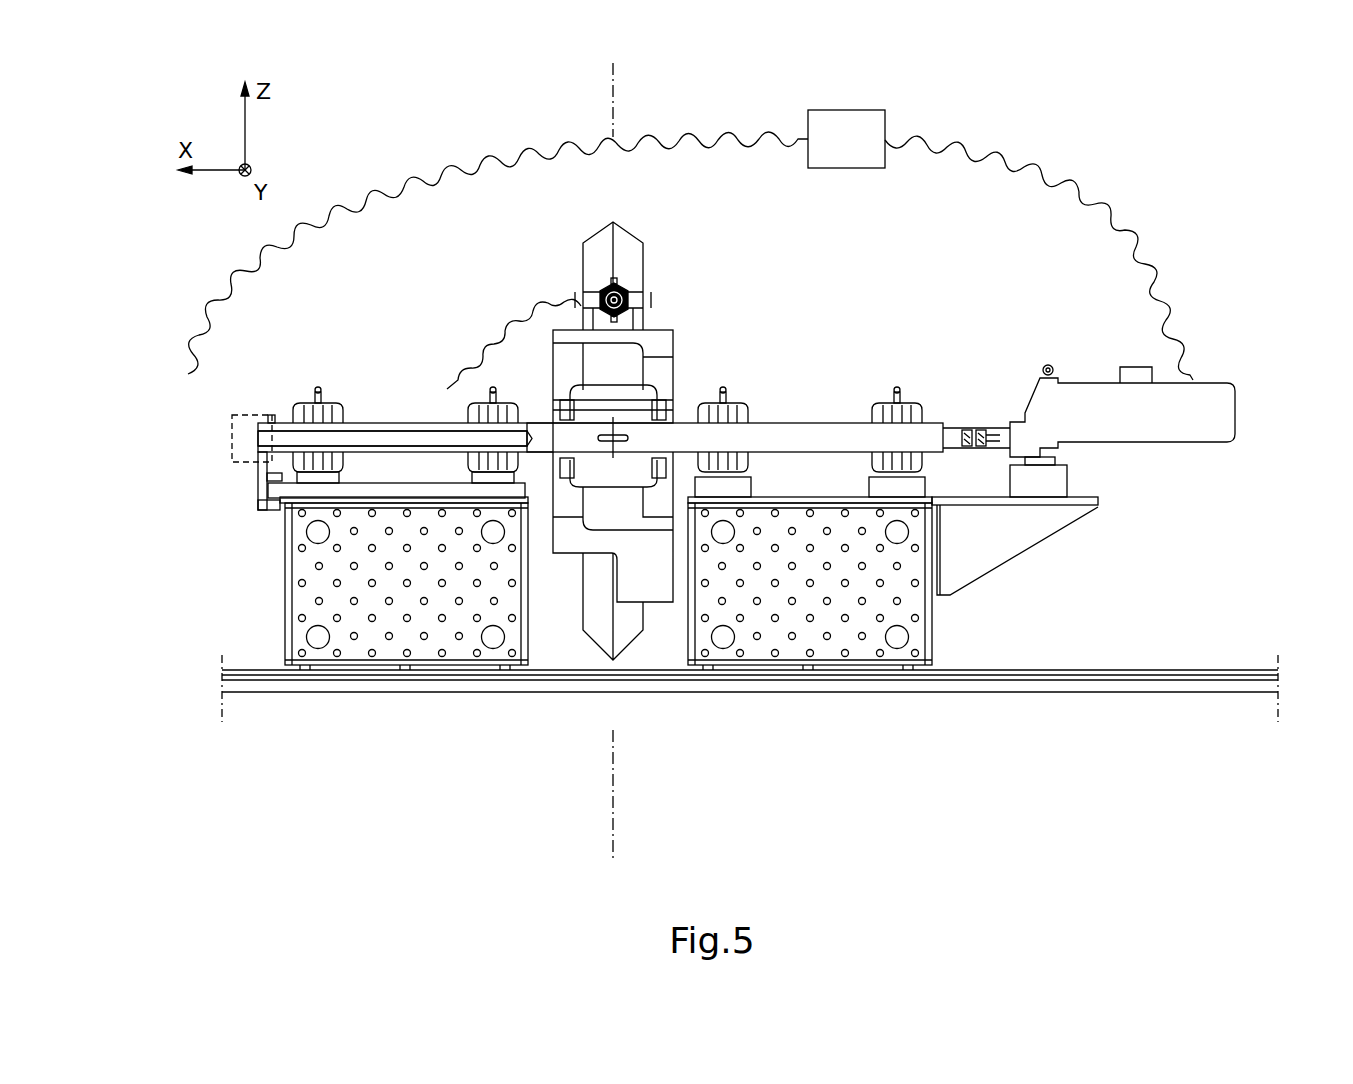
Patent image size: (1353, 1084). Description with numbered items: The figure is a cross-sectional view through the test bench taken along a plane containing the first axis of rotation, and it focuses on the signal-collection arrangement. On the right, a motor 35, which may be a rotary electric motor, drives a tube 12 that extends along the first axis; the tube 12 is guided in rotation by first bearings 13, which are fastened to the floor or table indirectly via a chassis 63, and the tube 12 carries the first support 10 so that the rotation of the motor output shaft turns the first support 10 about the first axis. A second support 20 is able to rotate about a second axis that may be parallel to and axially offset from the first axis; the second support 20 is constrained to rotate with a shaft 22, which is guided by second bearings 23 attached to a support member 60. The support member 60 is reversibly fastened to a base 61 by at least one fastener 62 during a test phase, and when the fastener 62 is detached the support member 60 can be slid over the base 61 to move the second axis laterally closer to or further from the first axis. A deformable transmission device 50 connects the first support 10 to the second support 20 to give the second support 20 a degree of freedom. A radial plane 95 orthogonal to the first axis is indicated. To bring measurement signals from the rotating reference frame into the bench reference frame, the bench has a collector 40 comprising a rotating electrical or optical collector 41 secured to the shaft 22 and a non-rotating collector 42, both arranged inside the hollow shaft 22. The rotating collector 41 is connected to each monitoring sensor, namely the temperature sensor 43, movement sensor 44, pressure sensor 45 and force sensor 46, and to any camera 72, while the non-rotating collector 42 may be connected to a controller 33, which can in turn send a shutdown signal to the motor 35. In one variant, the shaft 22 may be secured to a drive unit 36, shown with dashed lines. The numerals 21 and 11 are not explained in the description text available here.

The radial plane 95 is at (613, 90).
The controller 33 is at (832, 156).
The collector 40 is at (218, 396).
The drive unit 36 is at (232, 443).
The fastener 62 is at (265, 490).
The tube 12 is at (842, 435).
The rotating collector 41 is at (413, 415).
The non-rotating collector 42 is at (380, 440).
The shaft 22 is at (543, 430).
The second bearings 23 is at (303, 403).
The first bearings 13 is at (743, 410).
The support member 60 is at (410, 487).
The base 61 is at (353, 617).
The chassis 63 is at (863, 618).
The second support 20 is at (647, 582).
The holder guide 21 is at (613, 366).
The transmission device 50 is at (620, 407).
The first support 10 is at (675, 382).
The roller 11 is at (613, 468).
The camera 72 is at (600, 300).
The temperature sensor 43 is at (640, 300).
The movement sensor 44 is at (614, 300).
The pressure sensor 45 is at (614, 300).
The force sensor 46 is at (614, 300).
The motor 35 is at (1220, 413).